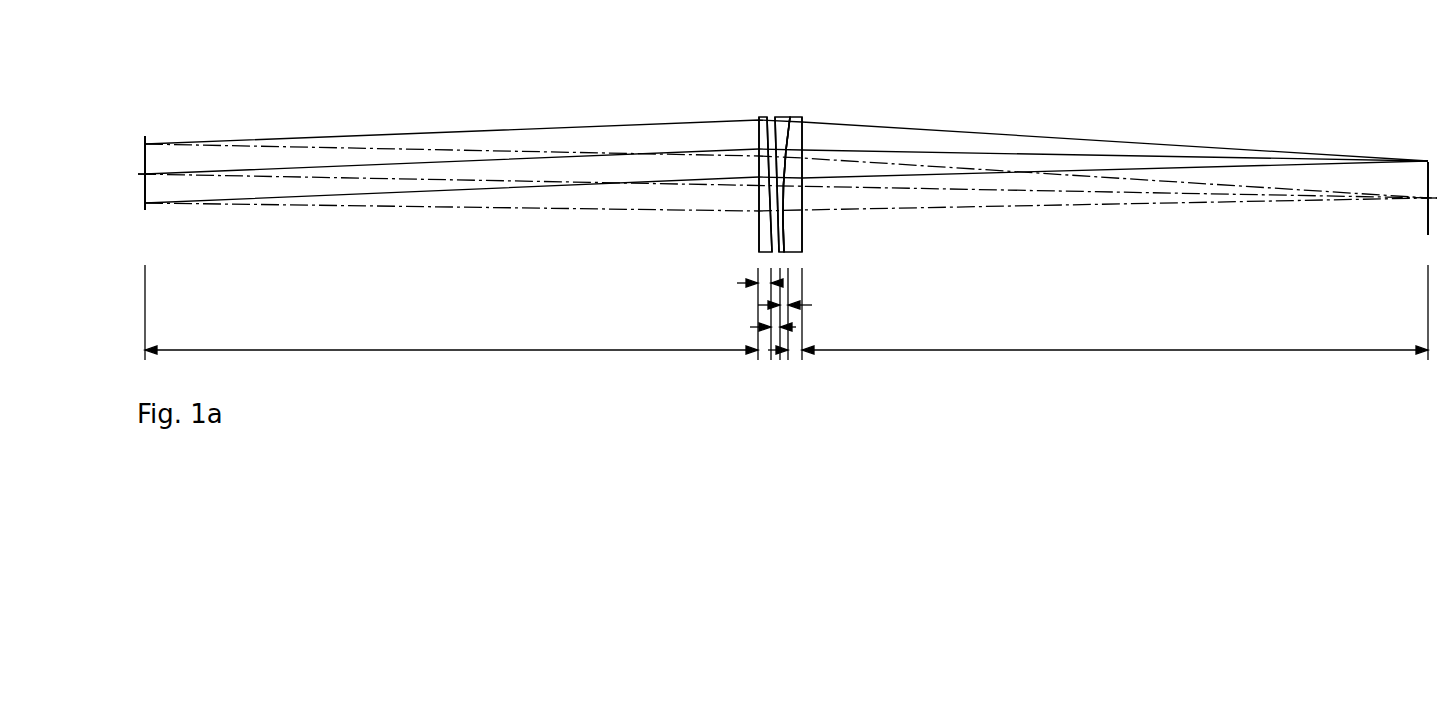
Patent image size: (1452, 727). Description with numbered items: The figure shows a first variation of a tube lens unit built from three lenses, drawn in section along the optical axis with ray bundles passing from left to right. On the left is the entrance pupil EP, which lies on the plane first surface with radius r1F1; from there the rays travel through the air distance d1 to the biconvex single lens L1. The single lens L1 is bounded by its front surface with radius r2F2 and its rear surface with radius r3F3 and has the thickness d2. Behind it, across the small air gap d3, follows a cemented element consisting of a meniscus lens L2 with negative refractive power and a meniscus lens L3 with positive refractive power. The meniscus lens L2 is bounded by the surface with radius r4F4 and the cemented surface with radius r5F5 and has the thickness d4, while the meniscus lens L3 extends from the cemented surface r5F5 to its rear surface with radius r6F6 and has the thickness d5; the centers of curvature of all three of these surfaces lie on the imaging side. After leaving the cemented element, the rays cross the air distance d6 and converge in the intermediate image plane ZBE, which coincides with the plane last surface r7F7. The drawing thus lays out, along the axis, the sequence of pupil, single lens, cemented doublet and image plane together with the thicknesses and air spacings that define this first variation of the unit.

The entrance pupil EP is at (150, 129).
The radius r1 and surface F1 r1F1 is at (201, 128).
The radius r2 and surface F2 r2F2 is at (755, 139).
The radius r3 and surface F3 r3F3 is at (766, 132).
The radius r4 and surface F4 r4F4 is at (772, 128).
The radius r5 and surface F5 r5F5 is at (797, 124).
The radius r6 and surface F6 r6F6 is at (807, 138).
The intermediate image plane ZBE is at (1427, 183).
The radius r7 and surface F7 r7F7 is at (1377, 152).
The biconvex single lens L1 is at (760, 202).
The meniscus lens with negative refractive power L2 is at (820, 194).
The meniscus lens with positive refractive power L3 is at (792, 191).
The distance in air between entrance pupil and lens L1 d1 is at (451, 332).
The thickness of lens L1 d2 is at (715, 293).
The distance in air between lens L1 and L2 d3 is at (770, 327).
The thickness of lens L2 d4 is at (807, 318).
The thickness of lens L3 d5 is at (797, 343).
The distance in air between lens L3 and intermediate image plane d6 is at (1115, 332).